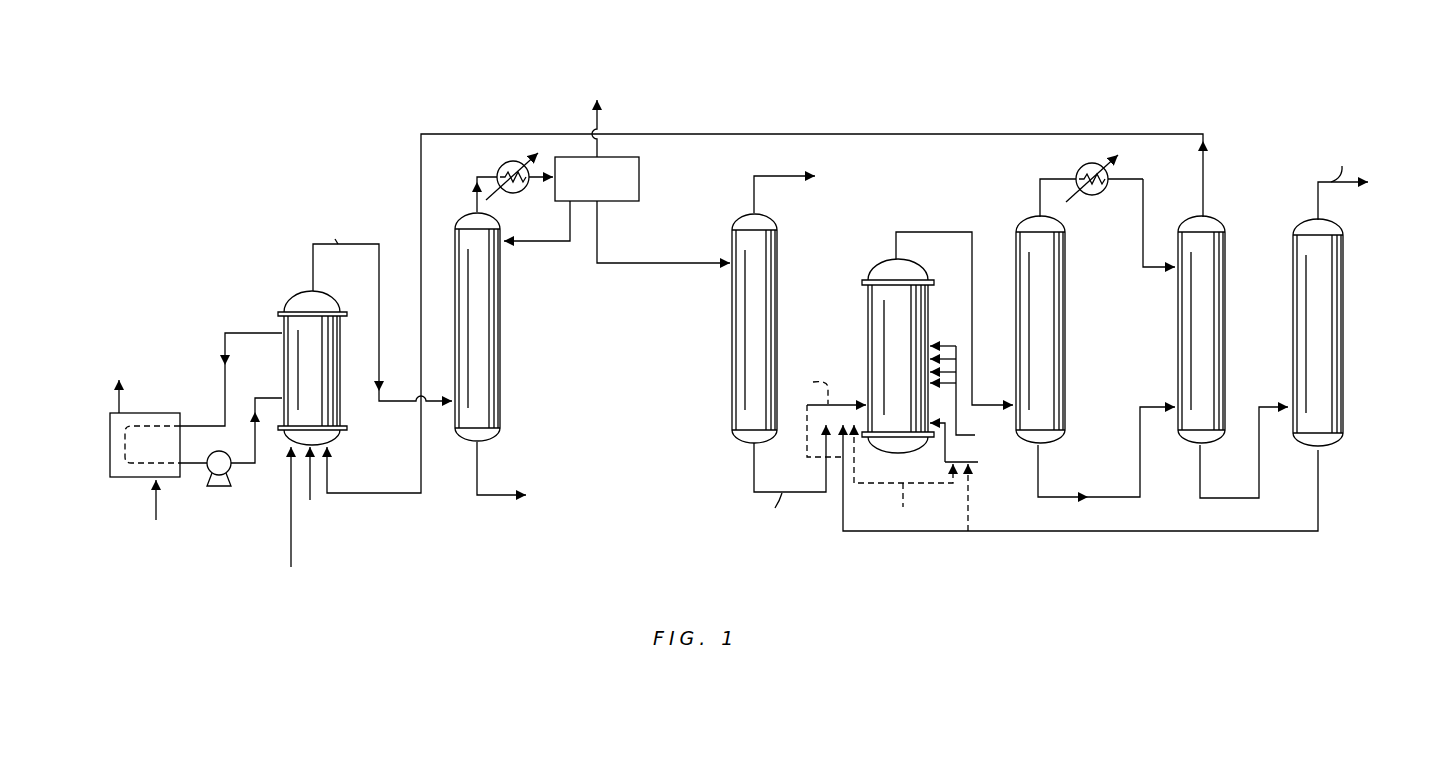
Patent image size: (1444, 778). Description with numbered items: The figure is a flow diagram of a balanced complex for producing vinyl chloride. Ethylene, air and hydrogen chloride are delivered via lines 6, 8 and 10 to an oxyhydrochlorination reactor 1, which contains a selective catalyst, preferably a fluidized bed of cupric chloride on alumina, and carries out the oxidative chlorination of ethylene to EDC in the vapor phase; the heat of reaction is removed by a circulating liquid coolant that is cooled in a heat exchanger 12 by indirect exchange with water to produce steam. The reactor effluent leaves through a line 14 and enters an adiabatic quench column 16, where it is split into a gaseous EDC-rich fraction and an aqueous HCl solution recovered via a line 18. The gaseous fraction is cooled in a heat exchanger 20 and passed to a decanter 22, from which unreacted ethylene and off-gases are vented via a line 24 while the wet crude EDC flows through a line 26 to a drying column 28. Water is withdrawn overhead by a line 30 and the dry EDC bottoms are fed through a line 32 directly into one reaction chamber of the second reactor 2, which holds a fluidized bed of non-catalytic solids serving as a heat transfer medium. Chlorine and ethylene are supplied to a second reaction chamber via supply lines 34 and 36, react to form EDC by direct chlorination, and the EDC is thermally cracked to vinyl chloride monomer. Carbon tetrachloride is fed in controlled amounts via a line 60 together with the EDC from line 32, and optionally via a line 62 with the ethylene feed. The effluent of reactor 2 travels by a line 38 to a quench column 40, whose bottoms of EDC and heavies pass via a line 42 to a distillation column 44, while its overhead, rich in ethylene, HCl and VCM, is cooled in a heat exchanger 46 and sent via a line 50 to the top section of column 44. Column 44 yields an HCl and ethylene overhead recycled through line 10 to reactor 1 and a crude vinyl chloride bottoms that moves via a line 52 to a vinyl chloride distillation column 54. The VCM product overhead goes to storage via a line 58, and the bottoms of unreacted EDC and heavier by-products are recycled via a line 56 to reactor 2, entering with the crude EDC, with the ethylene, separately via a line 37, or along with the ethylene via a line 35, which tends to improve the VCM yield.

The oxyhydrochlorination reactor 1 is at (345, 383).
The second reactor 2 is at (868, 340).
The ethylene line 6 is at (291, 513).
The air line 8 is at (311, 504).
The hydrogen chloride line 10 is at (412, 494).
The heat exchanger 12 is at (141, 413).
The line 14 is at (379, 268).
The adiabatic quench column 16 is at (500, 378).
The line 18 is at (478, 474).
The heat exchanger 20 is at (500, 165).
The decanter 22 is at (641, 170).
The line 24 is at (600, 128).
The line 26 is at (662, 265).
The drying column 28 is at (732, 334).
The line 30 is at (756, 195).
The line 32 is at (752, 468).
The supply line 34 is at (956, 346).
The line 35 is at (970, 503).
The supply line 36 is at (945, 447).
The line 37 is at (826, 415).
The line 38 is at (972, 232).
The quench column 40 is at (1065, 386).
The line 42 is at (1140, 464).
The distillation column 44 is at (1178, 304).
The heat exchanger 46 is at (1080, 165).
The line 50 is at (1143, 216).
The line 52 is at (1200, 465).
The vinyl chloride distillation column 54 is at (1345, 300).
The line 56 is at (1275, 532).
The line 58 is at (1320, 206).
The line 60 is at (903, 454).
The line 62 is at (910, 488).